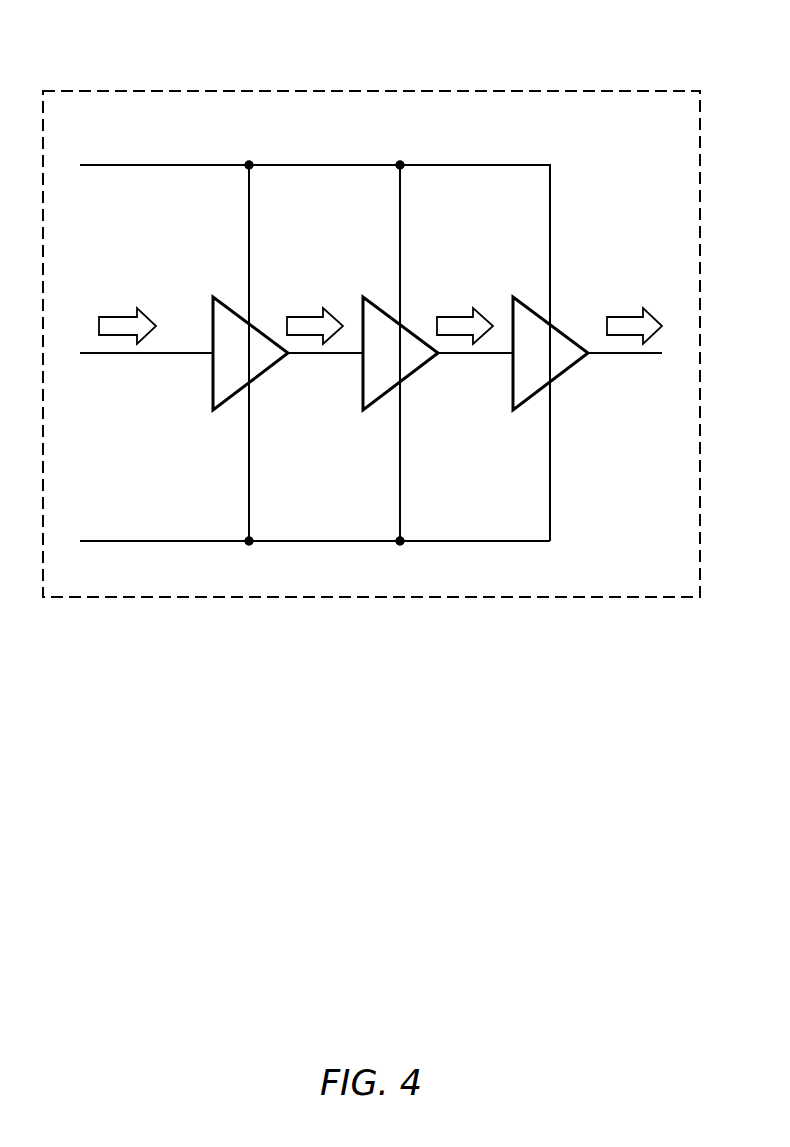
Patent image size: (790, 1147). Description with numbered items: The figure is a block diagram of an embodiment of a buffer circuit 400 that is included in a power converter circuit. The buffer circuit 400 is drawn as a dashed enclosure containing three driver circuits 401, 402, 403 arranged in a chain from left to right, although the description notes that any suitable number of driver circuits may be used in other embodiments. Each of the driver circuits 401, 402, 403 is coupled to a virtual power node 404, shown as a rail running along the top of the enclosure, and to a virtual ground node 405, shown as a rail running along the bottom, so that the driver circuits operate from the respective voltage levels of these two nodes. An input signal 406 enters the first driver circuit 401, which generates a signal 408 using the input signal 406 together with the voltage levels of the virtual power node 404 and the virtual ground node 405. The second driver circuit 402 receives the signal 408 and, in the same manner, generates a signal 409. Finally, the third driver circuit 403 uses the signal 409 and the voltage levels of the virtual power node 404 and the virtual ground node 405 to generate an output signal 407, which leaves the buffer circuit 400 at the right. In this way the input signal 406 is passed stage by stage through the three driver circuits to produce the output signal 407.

The buffer circuit 400 is at (383, 90).
The driver circuit 401 is at (265, 364).
The driver circuit 402 is at (416, 364).
The driver circuit 403 is at (565, 364).
The virtual power node 404 is at (315, 328).
The virtual ground node 405 is at (315, 528).
The input signal 406 is at (127, 314).
The output signal 407 is at (634, 314).
The signal 408 is at (314, 314).
The signal 409 is at (465, 314).